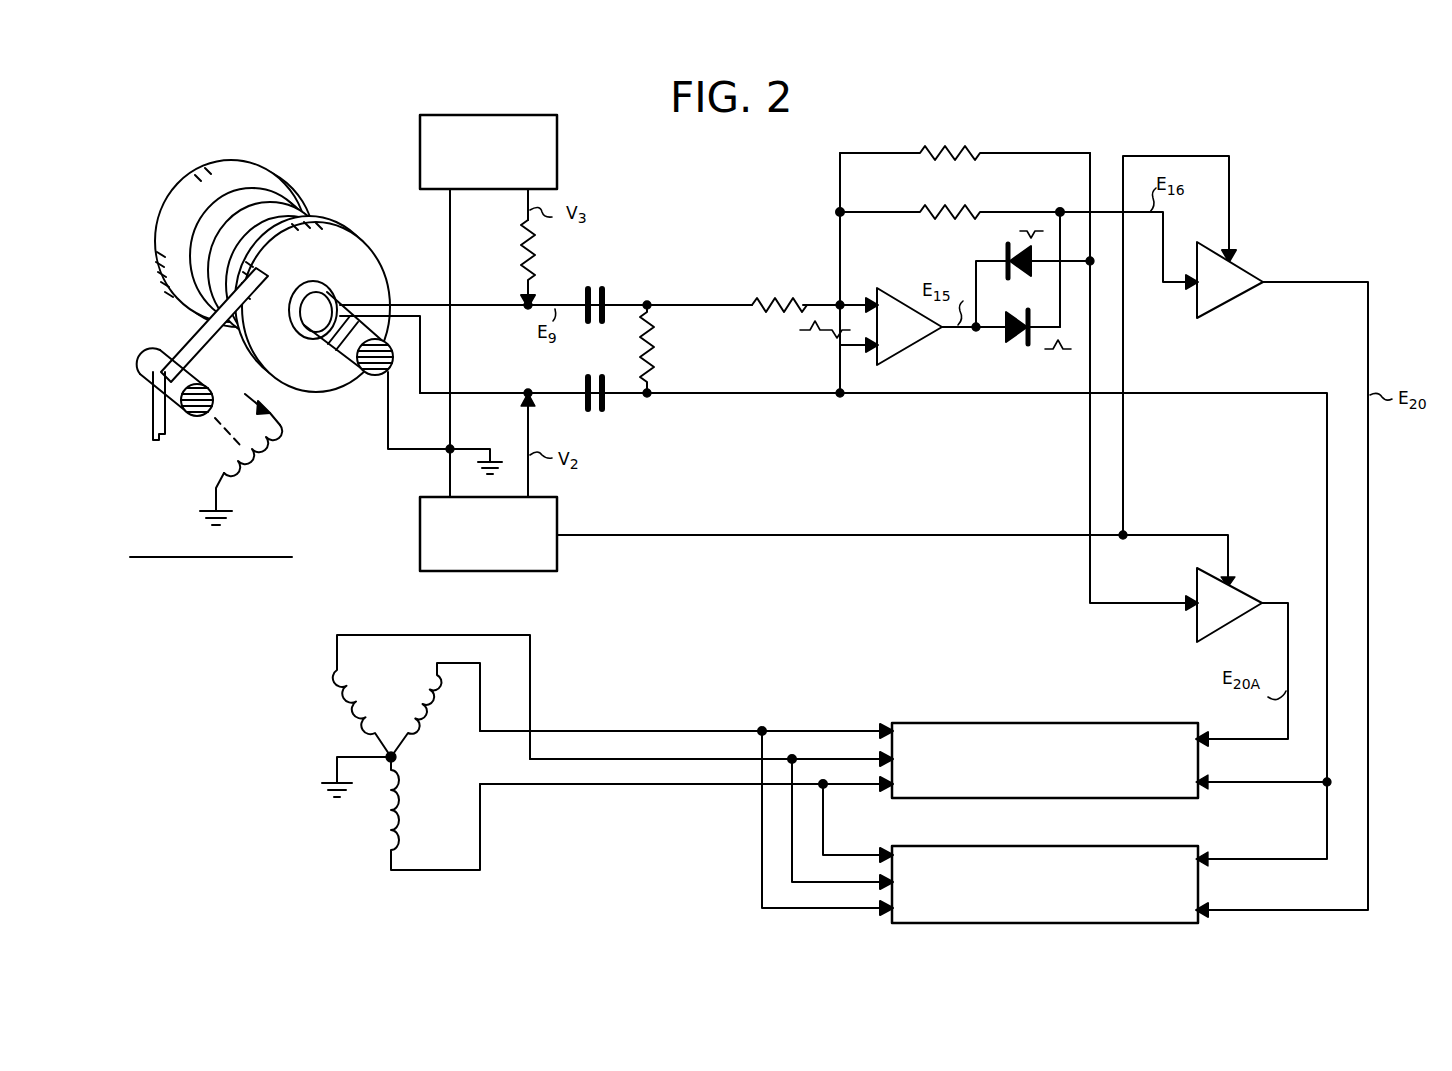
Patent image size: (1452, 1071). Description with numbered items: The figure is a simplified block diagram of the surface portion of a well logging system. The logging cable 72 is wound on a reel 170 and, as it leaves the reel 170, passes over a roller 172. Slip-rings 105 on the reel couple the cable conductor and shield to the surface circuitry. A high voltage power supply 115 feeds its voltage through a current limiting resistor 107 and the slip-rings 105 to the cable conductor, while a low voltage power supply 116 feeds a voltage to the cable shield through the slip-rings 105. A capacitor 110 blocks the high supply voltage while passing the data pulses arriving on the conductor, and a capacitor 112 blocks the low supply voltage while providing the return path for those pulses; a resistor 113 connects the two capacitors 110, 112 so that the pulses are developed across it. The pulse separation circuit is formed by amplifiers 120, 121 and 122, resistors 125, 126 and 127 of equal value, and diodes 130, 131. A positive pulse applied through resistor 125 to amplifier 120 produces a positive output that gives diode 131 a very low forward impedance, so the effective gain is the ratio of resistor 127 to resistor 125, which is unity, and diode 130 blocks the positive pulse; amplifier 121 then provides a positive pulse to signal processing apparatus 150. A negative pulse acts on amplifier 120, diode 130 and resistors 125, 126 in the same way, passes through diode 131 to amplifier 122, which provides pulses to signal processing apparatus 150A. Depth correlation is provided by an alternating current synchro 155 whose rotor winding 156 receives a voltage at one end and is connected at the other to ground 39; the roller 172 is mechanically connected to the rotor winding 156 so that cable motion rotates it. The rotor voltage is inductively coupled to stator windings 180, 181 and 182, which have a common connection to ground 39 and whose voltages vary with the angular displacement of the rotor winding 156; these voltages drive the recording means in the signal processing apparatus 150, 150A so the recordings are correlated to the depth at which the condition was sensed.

The reel 170 is at (205, 190).
The slip-rings 105 is at (326, 345).
The roller 172 is at (145, 357).
The cable 72 is at (152, 421).
The alternating current synchro 155 is at (218, 580).
The rotor winding 156 is at (264, 441).
The ground 39 is at (227, 506).
The high voltage power supply 115 is at (557, 172).
The current limiting resistor 107 is at (522, 241).
The capacitor 110 is at (604, 292).
The resistor 113 is at (652, 350).
The capacitor 112 is at (606, 405).
The low voltage power supply 116 is at (537, 562).
The resistor 125 is at (790, 296).
The amplifier 120 is at (900, 340).
The resistor 126 is at (966, 150).
The resistor 127 is at (966, 211).
The diode 130 is at (1004, 254).
The diode 131 is at (1012, 340).
The amplifier 121 is at (1238, 275).
The amplifier 122 is at (1238, 600).
The signal processing apparatus 150A is at (1048, 726).
The signal processing apparatus 150 is at (1138, 850).
The stator winding 180 is at (360, 697).
The stator winding 181 is at (422, 712).
The stator winding 182 is at (400, 826).